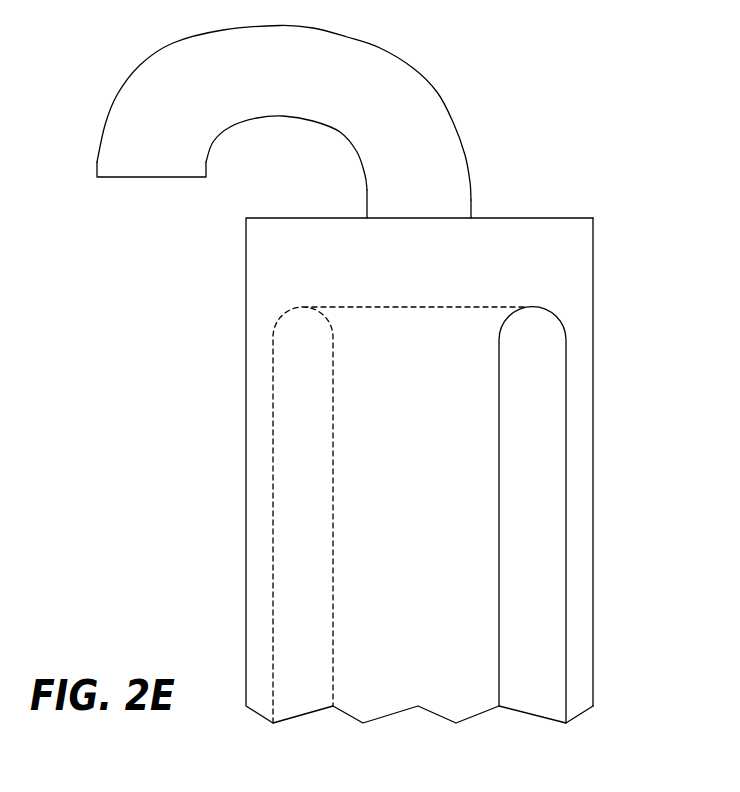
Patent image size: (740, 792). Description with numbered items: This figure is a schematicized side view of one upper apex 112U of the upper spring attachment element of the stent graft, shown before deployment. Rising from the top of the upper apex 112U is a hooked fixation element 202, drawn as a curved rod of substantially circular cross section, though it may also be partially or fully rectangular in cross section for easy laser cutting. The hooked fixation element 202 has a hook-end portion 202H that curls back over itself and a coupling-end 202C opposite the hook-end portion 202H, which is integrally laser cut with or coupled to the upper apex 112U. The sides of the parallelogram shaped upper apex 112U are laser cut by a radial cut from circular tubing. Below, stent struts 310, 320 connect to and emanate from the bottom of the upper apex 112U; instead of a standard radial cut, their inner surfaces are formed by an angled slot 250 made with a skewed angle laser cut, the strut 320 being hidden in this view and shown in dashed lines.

The hooked fixation element 202 is at (365, 62).
The hook-end portion 202H is at (130, 152).
The coupling-end 202C is at (471, 218).
The upper apex 112U is at (567, 267).
The angled slot 250 is at (532, 387).
The stent strut 310 is at (582, 478).
The stent strut 320 is at (360, 519).